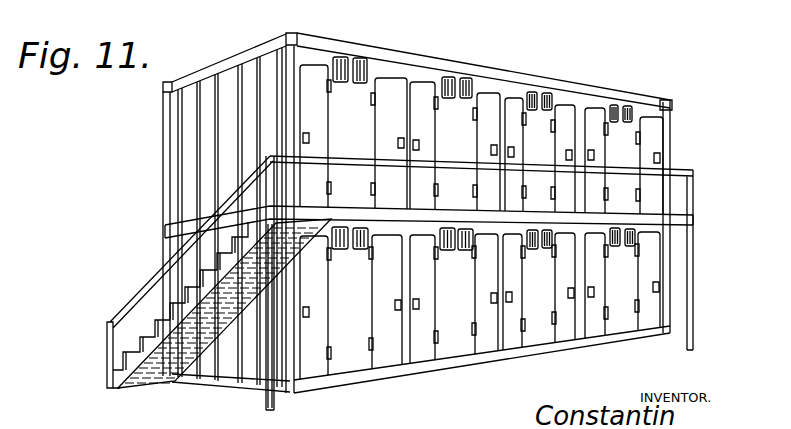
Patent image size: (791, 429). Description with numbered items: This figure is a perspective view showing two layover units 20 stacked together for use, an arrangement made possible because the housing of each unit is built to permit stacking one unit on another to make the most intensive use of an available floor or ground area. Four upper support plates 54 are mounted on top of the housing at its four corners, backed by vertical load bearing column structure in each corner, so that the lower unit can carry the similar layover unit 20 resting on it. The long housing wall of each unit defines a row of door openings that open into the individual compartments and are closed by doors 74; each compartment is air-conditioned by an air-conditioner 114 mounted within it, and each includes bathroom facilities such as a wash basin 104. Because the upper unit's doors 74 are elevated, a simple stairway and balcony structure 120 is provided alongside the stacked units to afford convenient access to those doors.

The layover unit 20 is at (676, 140).
The upper support plates 54 is at (286, 32).
The doors 74 is at (396, 78).
The wash basin 104 is at (359, 250).
The air-conditioner 114 is at (361, 58).
The stairway and balcony structure 120 is at (147, 386).